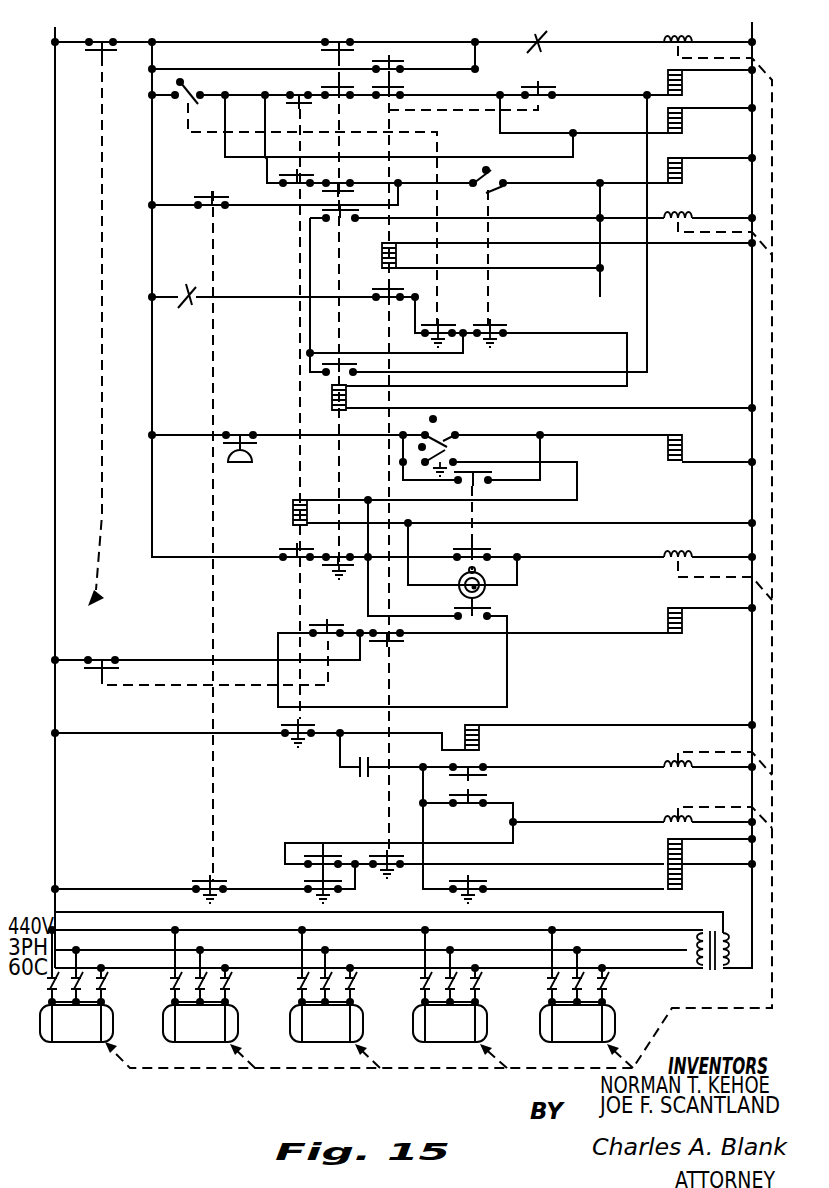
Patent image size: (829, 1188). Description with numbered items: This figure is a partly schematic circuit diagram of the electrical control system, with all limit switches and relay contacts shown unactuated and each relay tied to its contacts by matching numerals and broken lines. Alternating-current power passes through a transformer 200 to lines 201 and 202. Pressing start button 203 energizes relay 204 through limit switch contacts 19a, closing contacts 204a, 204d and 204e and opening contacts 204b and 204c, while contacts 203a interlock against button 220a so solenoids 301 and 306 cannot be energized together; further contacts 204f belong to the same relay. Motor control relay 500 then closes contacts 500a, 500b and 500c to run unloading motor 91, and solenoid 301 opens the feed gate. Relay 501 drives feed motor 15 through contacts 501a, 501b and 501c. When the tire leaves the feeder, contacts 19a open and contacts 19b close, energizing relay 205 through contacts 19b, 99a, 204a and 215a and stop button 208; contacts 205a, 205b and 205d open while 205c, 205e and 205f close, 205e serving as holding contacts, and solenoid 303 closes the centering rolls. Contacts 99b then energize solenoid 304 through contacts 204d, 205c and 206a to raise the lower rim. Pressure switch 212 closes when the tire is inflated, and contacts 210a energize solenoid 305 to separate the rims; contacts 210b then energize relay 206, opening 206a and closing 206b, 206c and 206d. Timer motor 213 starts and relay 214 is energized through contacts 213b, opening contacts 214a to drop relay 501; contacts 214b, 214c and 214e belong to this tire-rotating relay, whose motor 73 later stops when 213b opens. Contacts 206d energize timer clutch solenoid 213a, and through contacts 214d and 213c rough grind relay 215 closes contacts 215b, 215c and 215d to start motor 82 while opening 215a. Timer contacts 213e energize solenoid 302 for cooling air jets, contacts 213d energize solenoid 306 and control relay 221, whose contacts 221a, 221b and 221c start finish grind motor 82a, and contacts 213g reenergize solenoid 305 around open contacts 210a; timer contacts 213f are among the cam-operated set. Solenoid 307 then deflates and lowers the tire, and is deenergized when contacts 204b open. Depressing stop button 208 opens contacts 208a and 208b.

The stop button 208 is at (104, 36).
The relay contacts 205d is at (344, 40).
The relay contacts 214a is at (538, 36).
The relay 501 is at (678, 42).
The relay contacts 204e is at (408, 53).
The relay contacts 204d is at (402, 88).
The relay contacts 205c is at (336, 82).
The limit switch contacts 99b is at (190, 92).
The relay contacts 206a is at (300, 102).
The relay contact 204f is at (538, 92).
The solenoid 303 is at (684, 84).
The solenoid 304 is at (684, 122).
The start button 203 is at (210, 194).
The relay contacts 206b is at (290, 176).
The relay contacts 205b is at (340, 182).
The limit switch contacts 19a is at (491, 182).
The solenoid 301 is at (684, 172).
The relay contacts 205e is at (344, 224).
The motor control relay 500 is at (682, 220).
The relay 204 is at (398, 256).
The relay contacts 204a is at (401, 290).
The relay contacts 215a is at (198, 290).
The line 201 is at (55, 320).
The limit switch contacts 99a is at (439, 322).
The limit switch contacts 19b is at (493, 324).
The line 202 is at (752, 316).
The relay contacts 205f is at (340, 356).
The relay 205 is at (341, 410).
The pressure switch 212 is at (236, 430).
The limit switch contacts 210a is at (439, 432).
The limit switch contacts 210b is at (446, 458).
The solenoid 305 is at (684, 444).
The timer contacts 213g is at (477, 484).
The relay 206 is at (293, 508).
The timer contacts 213b is at (477, 552).
The relay 214 is at (682, 558).
The relay contacts 206c is at (289, 550).
The relay contact 205a is at (336, 579).
The timer contacts 213f is at (453, 612).
The timer motor 213 is at (489, 598).
The stop button contacts 208b is at (320, 620).
The relay contacts 204b is at (389, 643).
The solenoid 307 is at (684, 630).
The stop button contacts 208a is at (104, 658).
The relay contacts 206d is at (304, 726).
The timer clutch solenoid 213a is at (482, 742).
The relay contacts 214d is at (365, 772).
The timer contacts 213c is at (482, 780).
The rough grind relay 215 is at (670, 766).
The timer contacts 213d is at (491, 797).
The control relay 221 is at (665, 820).
The button 220a is at (326, 834).
The solenoid 306 is at (684, 854).
The start button contacts 203a is at (214, 886).
The relay contacts 204c is at (382, 885).
The timer contacts 213e is at (474, 884).
The solenoid 302 is at (684, 877).
The transformer 200 is at (708, 970).
The finish grind motor 82a is at (84, 1042).
The relay contacts 221a is at (54, 988).
The relay contacts 221b is at (83, 974).
The relay contacts 221c is at (105, 978).
The rough grind motor 82 is at (208, 1042).
The relay contacts 215d is at (174, 986).
The relay contacts 215b is at (206, 974).
The relay contacts 215c is at (230, 980).
The tire rotating motor 73 is at (334, 1042).
The contactor contact 214e is at (300, 986).
The contactor contact 214b is at (333, 974).
The contactor contact 214c is at (355, 980).
The feed motor 15 is at (458, 1042).
The relay contacts 501a is at (423, 986).
The relay contacts 501b is at (463, 974).
The relay contacts 501c is at (480, 980).
The unloading motor 91 is at (584, 1042).
The relay contacts 500a is at (550, 986).
The relay contacts 500b is at (591, 974).
The relay contacts 500c is at (607, 980).